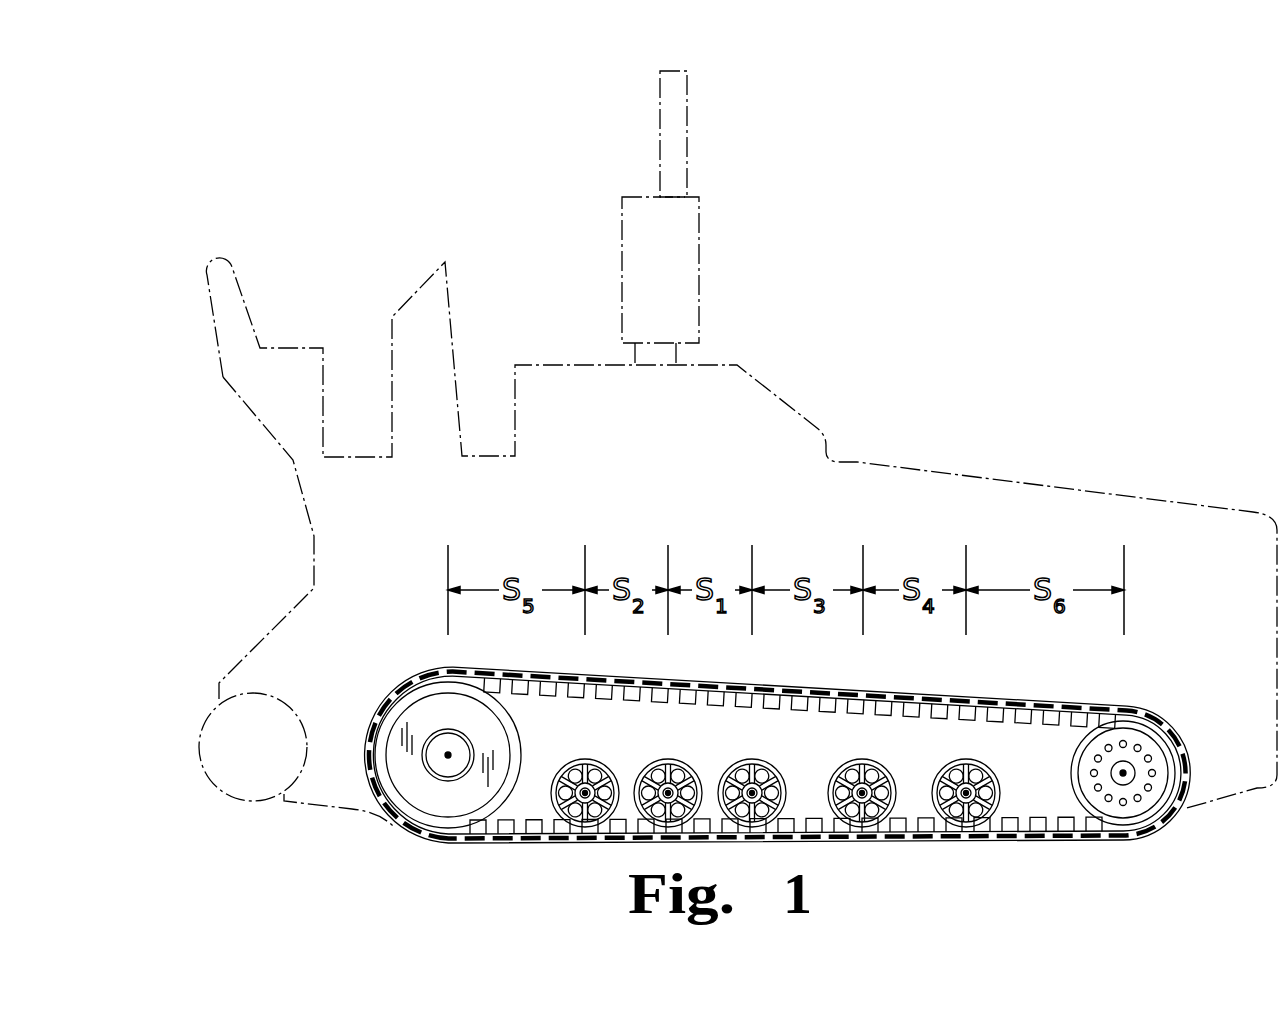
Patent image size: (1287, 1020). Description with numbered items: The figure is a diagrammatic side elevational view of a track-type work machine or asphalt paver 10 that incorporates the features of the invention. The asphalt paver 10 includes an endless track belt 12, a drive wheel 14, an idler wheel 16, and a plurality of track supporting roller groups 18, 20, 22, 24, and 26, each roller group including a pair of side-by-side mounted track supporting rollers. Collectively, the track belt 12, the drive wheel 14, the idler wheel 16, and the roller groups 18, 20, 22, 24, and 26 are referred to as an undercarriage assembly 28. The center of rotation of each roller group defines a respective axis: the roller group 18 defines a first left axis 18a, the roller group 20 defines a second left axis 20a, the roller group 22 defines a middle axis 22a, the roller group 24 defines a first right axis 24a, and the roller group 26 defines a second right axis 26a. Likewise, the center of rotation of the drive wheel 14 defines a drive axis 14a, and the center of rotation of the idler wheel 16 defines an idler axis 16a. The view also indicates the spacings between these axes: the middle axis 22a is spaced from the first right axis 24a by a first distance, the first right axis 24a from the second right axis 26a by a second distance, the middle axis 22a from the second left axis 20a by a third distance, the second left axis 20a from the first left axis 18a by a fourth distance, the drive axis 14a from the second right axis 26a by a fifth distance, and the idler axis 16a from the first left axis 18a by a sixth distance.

The track-type work machine 10 is at (1112, 227).
The endless track belt 12 is at (948, 843).
The drive wheel 14 is at (427, 801).
The drive axis 14a is at (447, 754).
The idler wheel 16 is at (1145, 803).
The idler axis 16a is at (1130, 768).
The track supporting roller group 18 is at (966, 759).
The first left axis 18a is at (942, 774).
The track supporting roller group 20 is at (862, 759).
The second left axis 20a is at (838, 774).
The track supporting roller group 22 is at (752, 759).
The middle axis 22a is at (728, 774).
The track supporting roller group 24 is at (668, 759).
The first right axis 24a is at (644, 774).
The track supporting roller group 26 is at (585, 759).
The second right axis 26a is at (561, 774).
The undercarriage assembly 28 is at (515, 874).